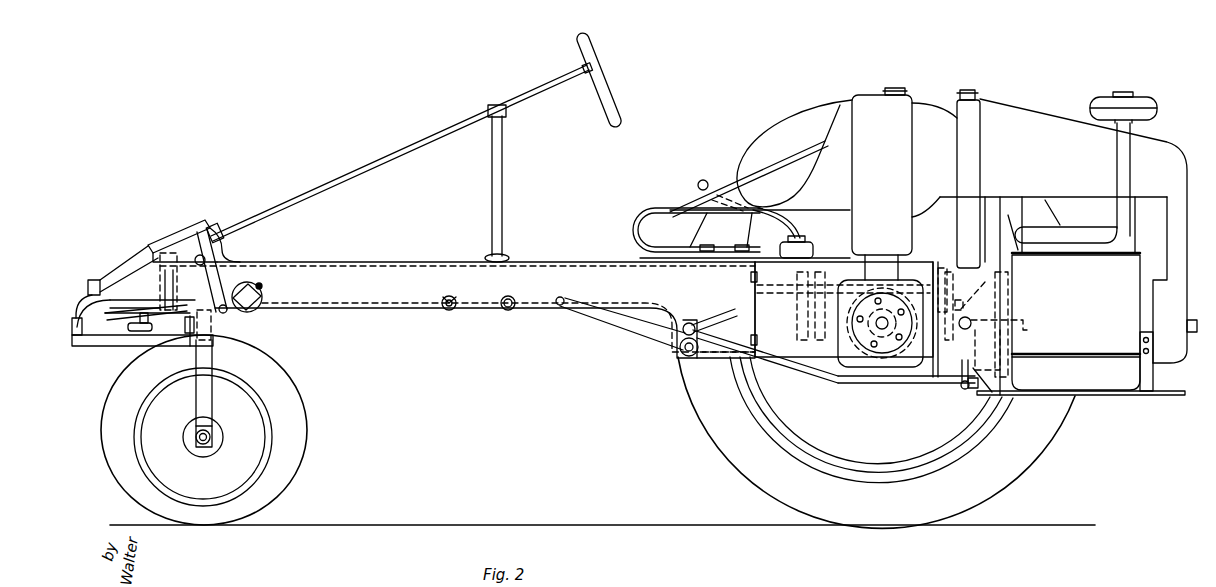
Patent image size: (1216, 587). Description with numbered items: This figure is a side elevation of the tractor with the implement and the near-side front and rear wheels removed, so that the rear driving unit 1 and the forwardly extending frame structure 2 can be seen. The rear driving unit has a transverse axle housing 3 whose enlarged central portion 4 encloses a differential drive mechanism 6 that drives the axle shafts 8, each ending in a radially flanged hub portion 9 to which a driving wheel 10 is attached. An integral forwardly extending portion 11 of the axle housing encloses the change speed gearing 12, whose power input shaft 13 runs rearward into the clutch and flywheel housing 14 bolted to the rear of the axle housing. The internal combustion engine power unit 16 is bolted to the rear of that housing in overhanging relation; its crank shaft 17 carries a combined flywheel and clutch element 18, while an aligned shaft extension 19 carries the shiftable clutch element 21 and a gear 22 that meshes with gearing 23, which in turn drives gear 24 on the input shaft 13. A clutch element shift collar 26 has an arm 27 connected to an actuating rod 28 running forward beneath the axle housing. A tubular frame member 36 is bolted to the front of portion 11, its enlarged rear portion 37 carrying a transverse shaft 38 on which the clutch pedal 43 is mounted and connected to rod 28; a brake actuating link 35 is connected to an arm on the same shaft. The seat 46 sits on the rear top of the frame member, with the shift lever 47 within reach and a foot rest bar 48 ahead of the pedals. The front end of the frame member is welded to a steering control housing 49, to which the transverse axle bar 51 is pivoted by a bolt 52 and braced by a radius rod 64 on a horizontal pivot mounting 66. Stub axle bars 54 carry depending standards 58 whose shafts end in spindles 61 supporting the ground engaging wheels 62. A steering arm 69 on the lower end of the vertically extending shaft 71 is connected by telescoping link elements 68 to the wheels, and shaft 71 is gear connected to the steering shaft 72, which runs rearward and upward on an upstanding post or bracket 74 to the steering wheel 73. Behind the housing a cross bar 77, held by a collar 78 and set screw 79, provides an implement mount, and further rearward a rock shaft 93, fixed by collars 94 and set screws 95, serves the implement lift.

The rear driving unit 1 is at (1024, 102).
The frame structure 2 is at (398, 257).
The transverse axle housing 3 is at (908, 380).
The enlarged central portion 4 is at (945, 262).
The differential drive mechanism 6 is at (845, 345).
The axle shaft 8 is at (888, 323).
The radially flanged hub portion 9 is at (898, 350).
The driving wheel 10 is at (1073, 459).
The forwardly extending portion 11 is at (765, 318).
The change speed gearing 12 is at (800, 300).
The power input shaft 13 is at (834, 288).
The clutch and flywheel housing 14 is at (960, 380).
The internal combustion engine power unit 16 is at (1103, 303).
The engine crank shaft 17 is at (1018, 331).
The combined flywheel and clutch element 18 is at (1008, 284).
The shaft extension 19 is at (983, 350).
The shiftable clutch element 21 is at (972, 291).
The gear 22 is at (947, 313).
The gearing 23 is at (967, 308).
The gear 24 is at (938, 256).
The clutch element shift collar 26 is at (975, 303).
The arm 27 is at (960, 366).
The actuating rod 28 is at (826, 378).
The brake actuating link 35 is at (704, 322).
The tubular frame member 36 is at (402, 309).
The rear portion 37 is at (722, 360).
The shaft 38 is at (680, 352).
The clutch pedal 43 is at (606, 322).
The operator's station or seat 46 is at (814, 172).
The shift lever 47 is at (796, 232).
The foot rest bar 48 is at (510, 310).
The steering control housing 49 is at (173, 238).
The transverse axle bar 51 is at (189, 336).
The bolt 52 is at (214, 327).
The stub axle bar 54 is at (208, 340).
The standard 58 is at (196, 398).
The spindle 61 is at (211, 438).
The ground engaging wheel 62 is at (307, 457).
The radius rod 64 is at (116, 338).
The horizontal pivot mounting 66 is at (88, 291).
The telescoping link element 68 is at (151, 325).
The steering arm 69 is at (128, 314).
The vertically extending shaft 71 is at (177, 288).
The steering shaft 72 is at (345, 180).
The steering wheel 73 is at (621, 110).
The upstanding post or bracket 74 is at (503, 200).
The cross bar 77 is at (254, 315).
The collar 78 is at (242, 289).
The set screw 79 is at (261, 287).
The rock shaft 93 is at (450, 310).
The collar 94 is at (444, 298).
The set screw 95 is at (455, 297).